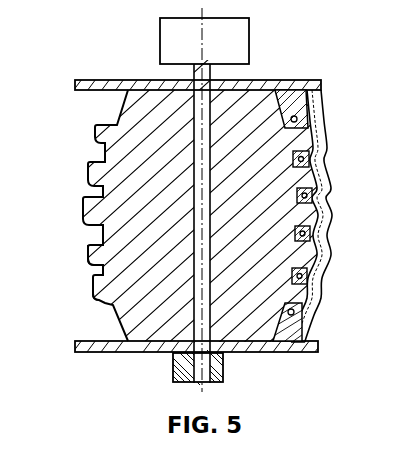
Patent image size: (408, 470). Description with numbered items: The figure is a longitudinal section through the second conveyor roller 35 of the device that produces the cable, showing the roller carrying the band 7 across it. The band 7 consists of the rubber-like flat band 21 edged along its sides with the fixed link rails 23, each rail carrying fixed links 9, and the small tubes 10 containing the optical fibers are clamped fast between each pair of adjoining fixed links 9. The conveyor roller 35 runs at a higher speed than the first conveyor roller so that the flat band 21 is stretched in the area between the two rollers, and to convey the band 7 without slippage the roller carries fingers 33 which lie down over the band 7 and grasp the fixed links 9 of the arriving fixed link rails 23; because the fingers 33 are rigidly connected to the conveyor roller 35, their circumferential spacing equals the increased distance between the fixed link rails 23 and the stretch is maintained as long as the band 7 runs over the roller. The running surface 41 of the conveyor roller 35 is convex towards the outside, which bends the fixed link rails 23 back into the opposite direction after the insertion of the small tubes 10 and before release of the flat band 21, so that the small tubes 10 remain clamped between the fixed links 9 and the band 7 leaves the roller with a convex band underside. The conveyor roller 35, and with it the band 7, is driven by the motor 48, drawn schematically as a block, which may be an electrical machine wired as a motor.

The motor 48 is at (175, 45).
The small tubes 10 is at (296, 107).
The band 7 is at (309, 98).
The fixed links 9 is at (291, 119).
The fingers 33 is at (95, 253).
The running surface 41 is at (102, 277).
The conveyor roller 35 is at (154, 340).
The fixed link rails 23 is at (290, 343).
The flat band 21 is at (304, 343).